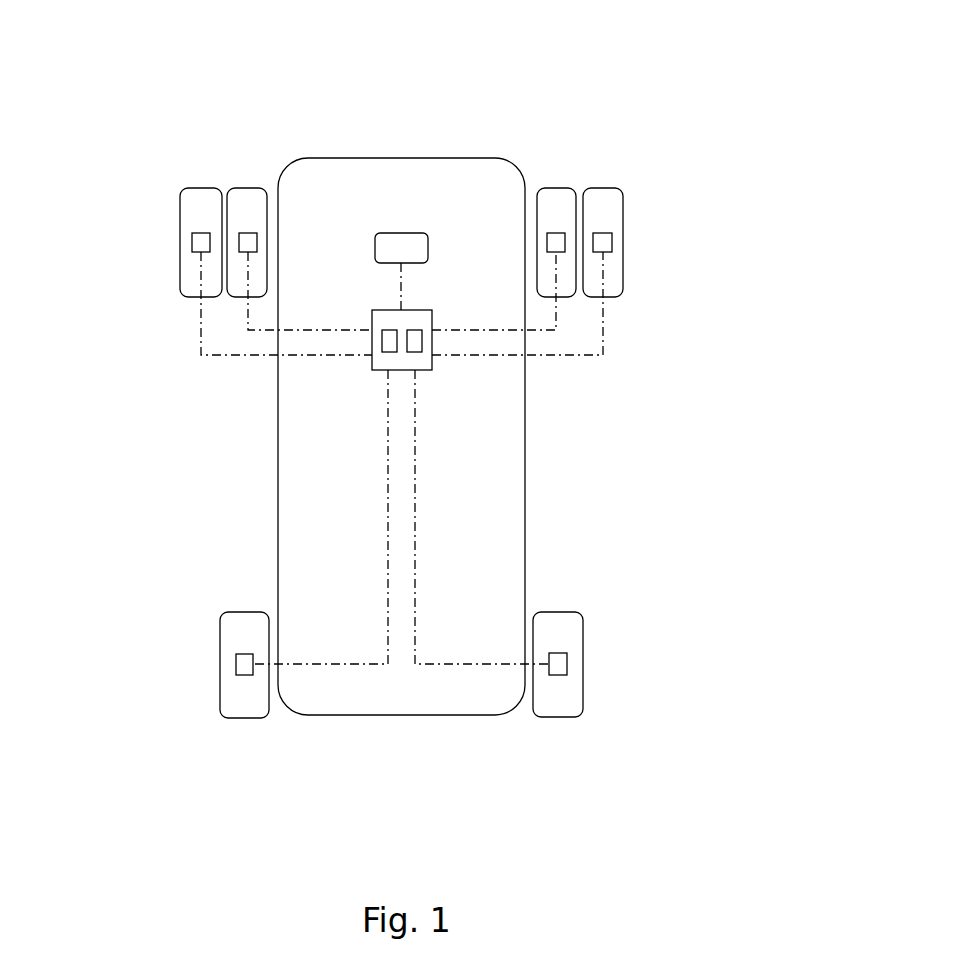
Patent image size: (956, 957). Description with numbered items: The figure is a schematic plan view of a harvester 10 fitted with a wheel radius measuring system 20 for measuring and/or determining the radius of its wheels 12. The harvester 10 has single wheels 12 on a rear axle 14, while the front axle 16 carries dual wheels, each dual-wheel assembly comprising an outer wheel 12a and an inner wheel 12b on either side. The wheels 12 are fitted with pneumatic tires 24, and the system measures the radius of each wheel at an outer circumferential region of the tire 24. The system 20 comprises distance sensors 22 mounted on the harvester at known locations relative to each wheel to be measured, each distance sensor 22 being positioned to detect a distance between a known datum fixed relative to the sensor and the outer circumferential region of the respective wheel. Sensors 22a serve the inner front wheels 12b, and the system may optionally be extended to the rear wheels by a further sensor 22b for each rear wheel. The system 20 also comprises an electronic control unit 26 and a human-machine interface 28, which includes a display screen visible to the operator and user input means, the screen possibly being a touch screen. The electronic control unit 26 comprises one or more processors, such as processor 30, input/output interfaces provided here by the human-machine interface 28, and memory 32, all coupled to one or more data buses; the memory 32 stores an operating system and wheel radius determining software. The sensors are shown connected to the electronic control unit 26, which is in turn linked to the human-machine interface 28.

The harvester 10 is at (534, 357).
The wheels 12 is at (443, 718).
The outer wheel 12a is at (438, 286).
The inner wheel 12b is at (244, 188).
The rear axle 14 is at (583, 666).
The front axle 16 is at (623, 242).
The wheel radius measuring system 20 is at (690, 72).
The distance sensor 22 is at (202, 233).
The sensors for inner front wheels 22a is at (250, 240).
The further sensor for rear wheel 22b is at (237, 655).
The pneumatic tire 24 is at (422, 268).
The electronic control unit 26 is at (405, 369).
The human-machine interface 28 is at (405, 233).
The processor 30 is at (381, 343).
The memory 32 is at (417, 340).